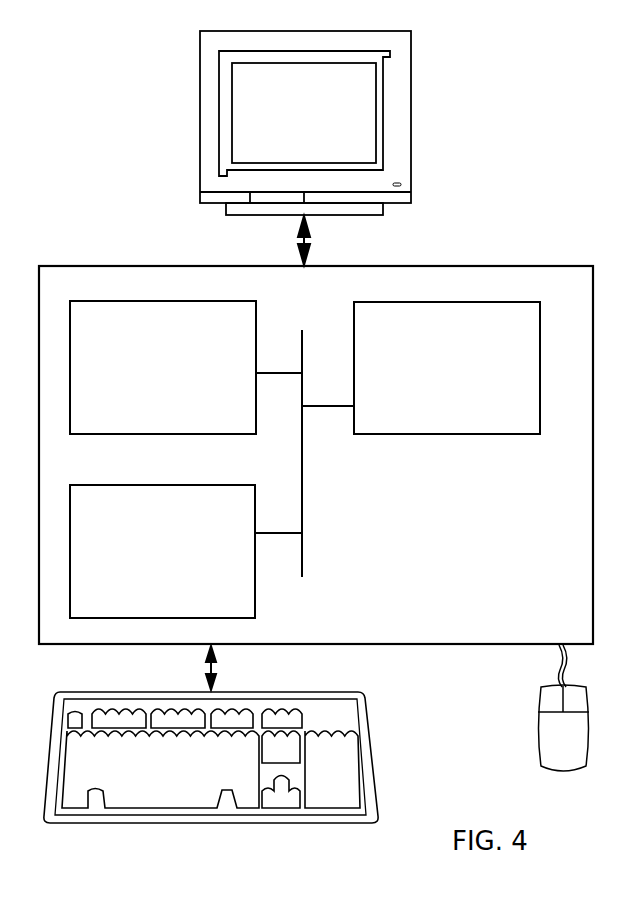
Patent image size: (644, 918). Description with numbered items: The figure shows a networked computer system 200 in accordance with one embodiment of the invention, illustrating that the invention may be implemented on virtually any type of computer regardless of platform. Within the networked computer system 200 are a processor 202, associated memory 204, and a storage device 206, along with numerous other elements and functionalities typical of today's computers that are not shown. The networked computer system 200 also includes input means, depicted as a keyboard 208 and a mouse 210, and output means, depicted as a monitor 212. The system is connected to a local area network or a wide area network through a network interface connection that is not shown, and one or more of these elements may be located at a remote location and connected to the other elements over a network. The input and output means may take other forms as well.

The networked computer system 200 is at (543, 207).
The processor 202 is at (445, 378).
The memory 204 is at (146, 378).
The storage device 206 is at (143, 562).
The keyboard 208 is at (138, 788).
The mouse 210 is at (546, 734).
The monitor 212 is at (288, 126).